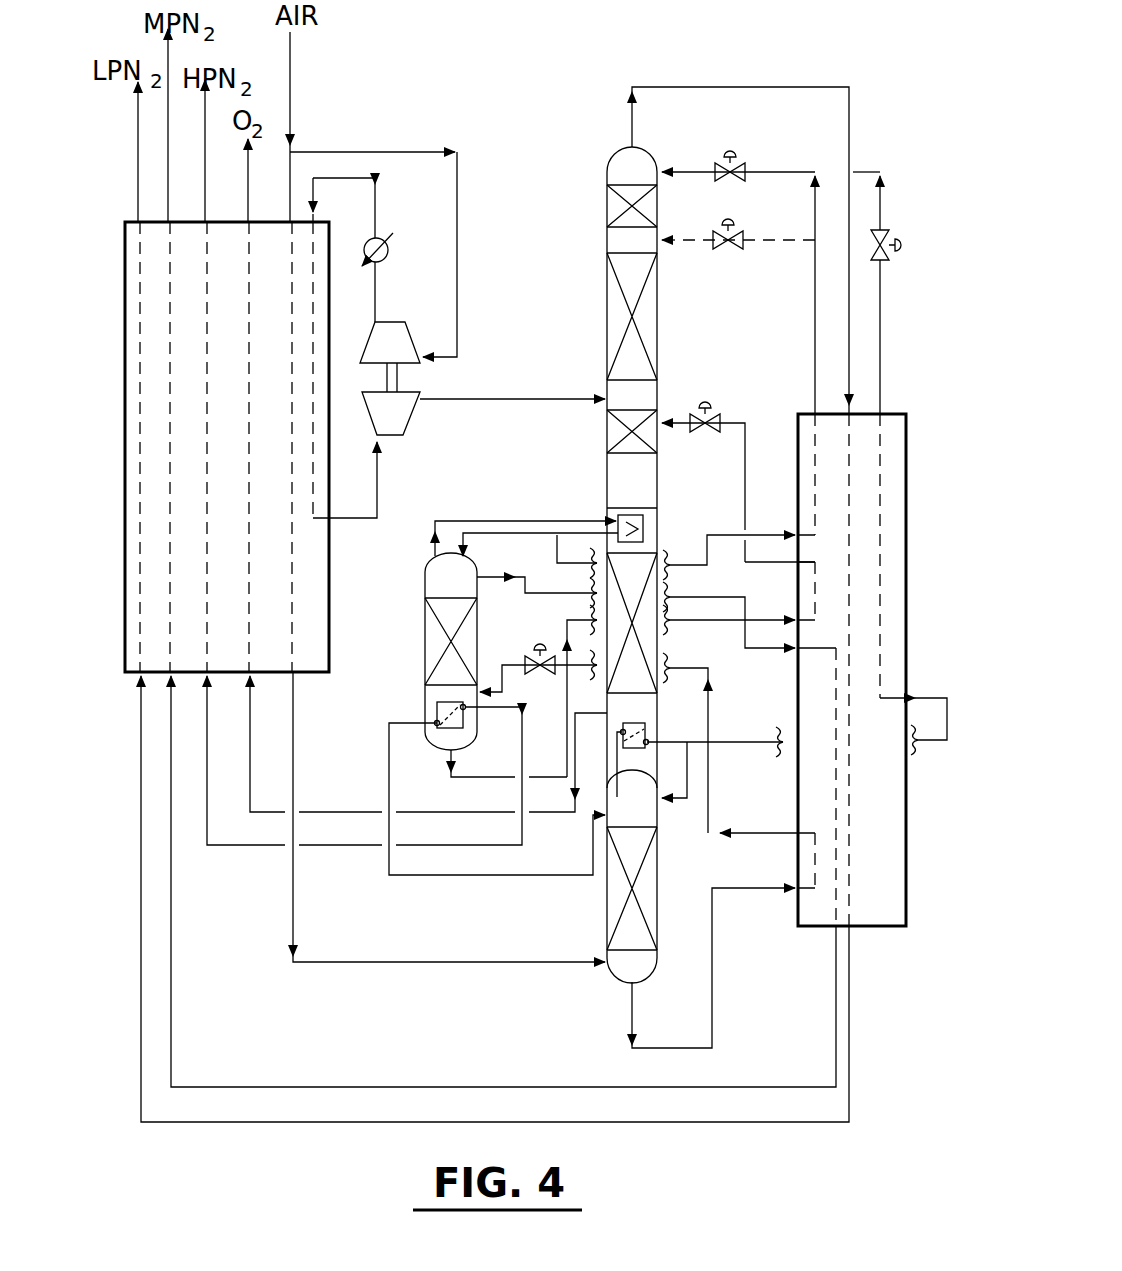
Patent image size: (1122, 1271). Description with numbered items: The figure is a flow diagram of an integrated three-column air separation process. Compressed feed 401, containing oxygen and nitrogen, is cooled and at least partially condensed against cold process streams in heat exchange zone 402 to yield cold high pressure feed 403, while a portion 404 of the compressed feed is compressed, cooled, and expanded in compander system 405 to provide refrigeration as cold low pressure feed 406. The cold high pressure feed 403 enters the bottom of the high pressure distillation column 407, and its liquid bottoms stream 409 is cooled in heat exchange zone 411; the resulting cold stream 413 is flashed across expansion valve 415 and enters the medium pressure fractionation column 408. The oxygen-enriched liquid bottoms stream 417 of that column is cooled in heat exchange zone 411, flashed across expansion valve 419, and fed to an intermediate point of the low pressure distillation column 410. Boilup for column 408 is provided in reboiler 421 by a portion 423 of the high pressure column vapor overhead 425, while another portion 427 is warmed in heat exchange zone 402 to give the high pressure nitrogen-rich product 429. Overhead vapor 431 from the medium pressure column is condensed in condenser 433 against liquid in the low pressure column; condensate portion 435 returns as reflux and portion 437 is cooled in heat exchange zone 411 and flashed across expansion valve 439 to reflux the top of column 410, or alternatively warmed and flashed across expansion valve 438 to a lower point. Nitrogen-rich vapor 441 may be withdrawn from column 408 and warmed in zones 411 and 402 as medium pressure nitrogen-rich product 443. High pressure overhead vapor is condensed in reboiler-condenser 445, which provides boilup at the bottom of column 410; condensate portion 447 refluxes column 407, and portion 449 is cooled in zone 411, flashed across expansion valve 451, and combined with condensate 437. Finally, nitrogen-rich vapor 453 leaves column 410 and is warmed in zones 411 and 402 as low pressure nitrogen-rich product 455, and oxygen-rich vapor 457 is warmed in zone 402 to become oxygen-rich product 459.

The compressed feed 401 is at (290, 81).
The heat exchange zone 402 is at (347, 606).
The cold high pressure feed 403 is at (493, 962).
The portion of compressed feed 404 is at (430, 151).
The compander system 405 is at (450, 382).
The cold low pressure feed 406 is at (548, 400).
The high pressure distillation column 407 is at (606, 914).
The medium pressure fractionation column 408 is at (424, 648).
The liquid bottoms stream 409 is at (712, 994).
The low pressure distillation column 410 is at (607, 226).
The heat exchange zone 411 is at (794, 368).
The cold stream 413 is at (711, 700).
The expansion valve 415 is at (548, 670).
The liquid bottoms stream 417 is at (466, 782).
The expansion valve 419 is at (704, 398).
The reboiler 421 is at (436, 712).
The portion of high pressure column vapor overhead 423 is at (520, 835).
The high pressure column vapor overhead 425 is at (550, 870).
The portion of high pressure column vapor overhead 427 is at (339, 845).
The high pressure nitrogen-rich product 429 is at (204, 199).
The overhead vapor 431 is at (534, 518).
The condenser 433 is at (666, 518).
The portion of condensate 435 is at (484, 532).
The portion of condensate 437 is at (555, 553).
The expansion valve 438 is at (746, 249).
The expansion valve 439 is at (725, 150).
The nitrogen-rich vapor 441 is at (544, 598).
The medium pressure nitrogen-rich product 443 is at (167, 172).
The reboiler-condenser 445 is at (648, 728).
The portion of condensate 447 is at (683, 803).
The portion of condensate 449 is at (741, 742).
The expansion valve 451 is at (887, 229).
The nitrogen-rich vapor 453 is at (752, 88).
The low pressure nitrogen-rich product 455 is at (136, 144).
The oxygen-rich vapor 457 is at (364, 810).
The oxygen-rich product 459 is at (248, 176).